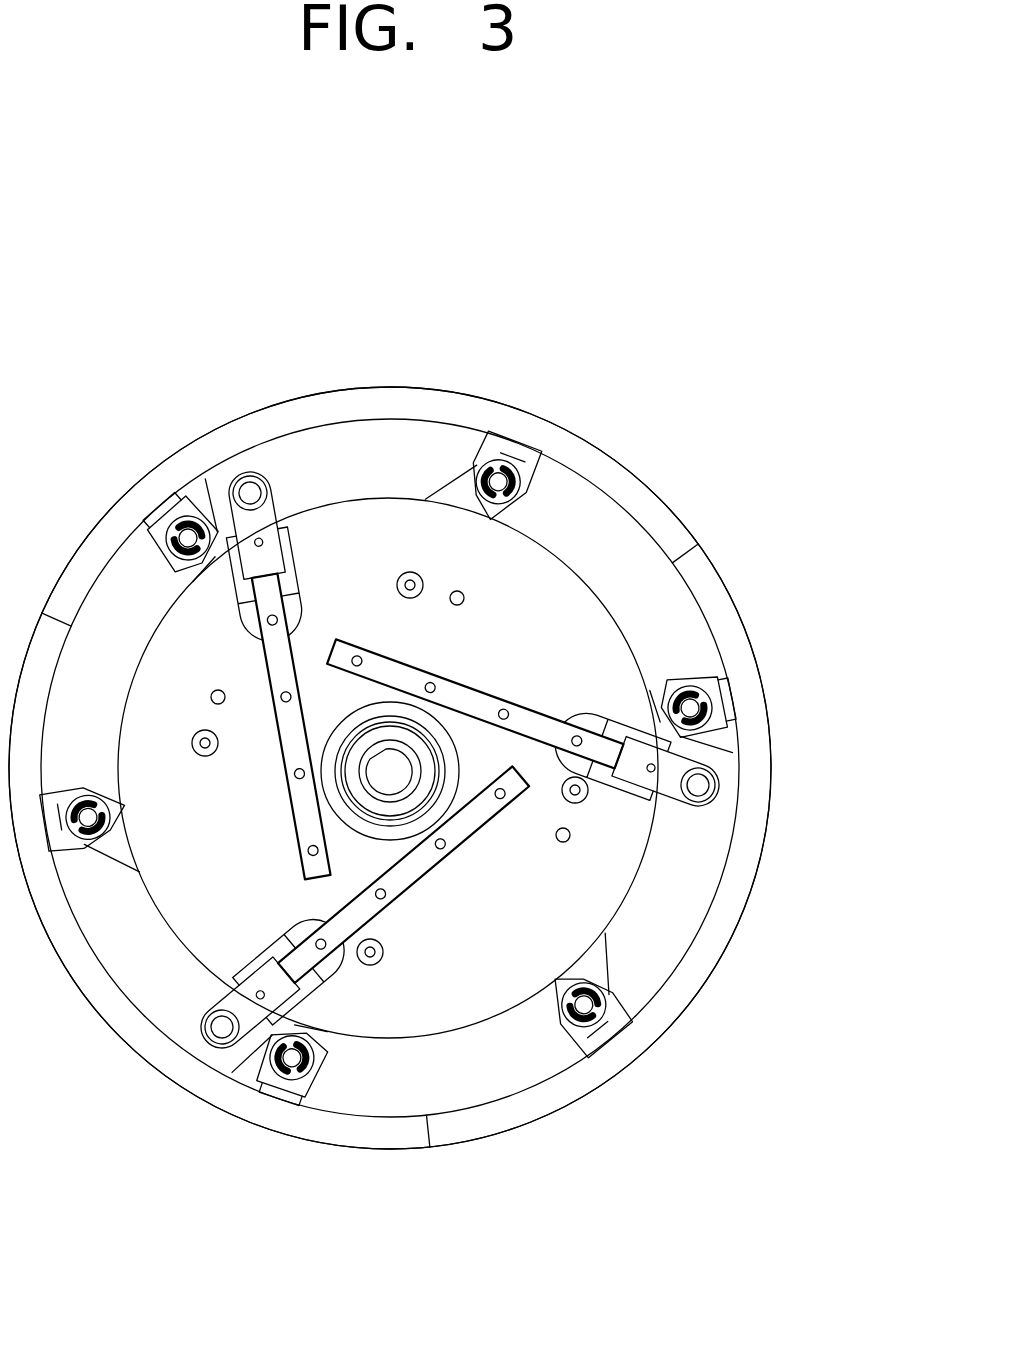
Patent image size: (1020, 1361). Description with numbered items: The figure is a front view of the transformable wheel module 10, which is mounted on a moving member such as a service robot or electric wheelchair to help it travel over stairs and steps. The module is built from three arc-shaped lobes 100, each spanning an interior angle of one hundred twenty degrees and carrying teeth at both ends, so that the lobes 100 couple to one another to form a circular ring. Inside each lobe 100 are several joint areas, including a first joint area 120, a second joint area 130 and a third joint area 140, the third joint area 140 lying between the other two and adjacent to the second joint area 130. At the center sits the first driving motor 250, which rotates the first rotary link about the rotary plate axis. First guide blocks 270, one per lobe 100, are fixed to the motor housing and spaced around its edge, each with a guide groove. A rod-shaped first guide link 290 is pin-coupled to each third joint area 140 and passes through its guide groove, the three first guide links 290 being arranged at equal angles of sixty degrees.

The transformable wheel module 10 is at (554, 361).
The lobe 100 is at (595, 1087).
The first joint area 120 is at (603, 1007).
The second joint area 130 is at (712, 703).
The third joint area 140 is at (730, 763).
The first driving motor 250 is at (641, 871).
The first guide block 270 is at (313, 973).
The first guide link 290 is at (418, 863).